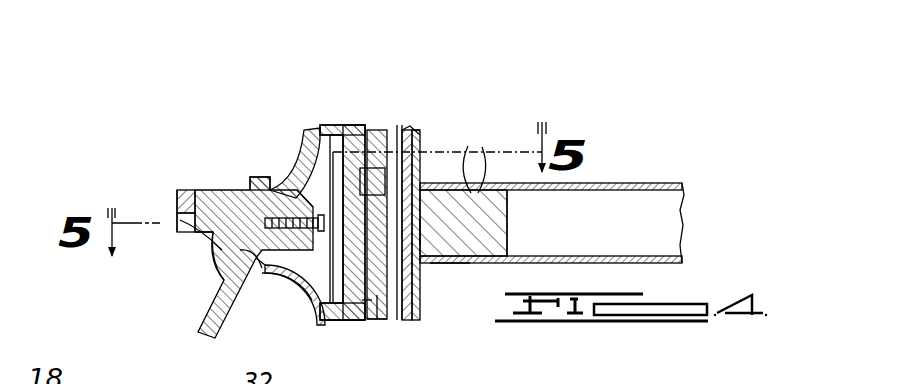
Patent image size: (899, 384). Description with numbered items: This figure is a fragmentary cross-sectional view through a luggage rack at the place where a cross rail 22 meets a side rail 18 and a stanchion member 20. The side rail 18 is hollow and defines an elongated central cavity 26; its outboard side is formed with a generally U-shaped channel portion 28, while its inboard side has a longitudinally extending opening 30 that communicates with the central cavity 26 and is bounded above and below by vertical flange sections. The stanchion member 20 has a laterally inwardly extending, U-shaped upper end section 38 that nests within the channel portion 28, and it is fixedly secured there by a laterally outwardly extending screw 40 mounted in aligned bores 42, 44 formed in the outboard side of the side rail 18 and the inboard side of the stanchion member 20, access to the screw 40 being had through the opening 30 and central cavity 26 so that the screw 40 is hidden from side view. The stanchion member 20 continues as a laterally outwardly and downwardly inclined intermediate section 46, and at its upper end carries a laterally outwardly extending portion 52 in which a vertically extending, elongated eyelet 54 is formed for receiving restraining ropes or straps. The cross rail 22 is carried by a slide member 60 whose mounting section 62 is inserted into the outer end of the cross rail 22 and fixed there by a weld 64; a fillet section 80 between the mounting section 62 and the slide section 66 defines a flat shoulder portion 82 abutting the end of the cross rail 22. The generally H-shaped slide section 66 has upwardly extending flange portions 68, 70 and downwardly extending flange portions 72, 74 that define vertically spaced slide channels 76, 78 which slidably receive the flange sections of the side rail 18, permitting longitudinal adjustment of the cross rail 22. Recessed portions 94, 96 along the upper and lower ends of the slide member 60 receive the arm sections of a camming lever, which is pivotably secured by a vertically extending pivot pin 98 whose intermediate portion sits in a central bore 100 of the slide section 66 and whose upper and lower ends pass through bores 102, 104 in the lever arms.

The side rail 18 is at (339, 124).
The stanchion member 20 is at (193, 322).
The cross rail 22 is at (628, 181).
The central cavity 26 is at (300, 306).
The U-shaped channel portion 28 is at (250, 181).
The longitudinally extending opening 30 is at (306, 200).
The upper end section 38 is at (254, 257).
The screw 40 is at (294, 268).
The bore 42 is at (320, 234).
The bore 44 is at (206, 241).
The intermediate section 46 is at (201, 299).
The laterally outwardly extending portion 52 is at (175, 202).
The eyelet 54 is at (182, 216).
The slide member 60 is at (511, 236).
The mounting section 62 is at (456, 264).
The weld 64 is at (484, 155).
The slide section 66 is at (330, 306).
The upwardly extending flange portion 68 is at (312, 150).
The upwardly extending flange portion 70 is at (385, 132).
The downwardly extending flange portion 72 is at (352, 319).
The downwardly extending flange portion 74 is at (380, 319).
The slide channel 76 is at (400, 178).
The slide channel 78 is at (368, 319).
The fillet section 80 is at (423, 268).
The shoulder portion 82 is at (463, 223).
The recessed portion 94 is at (421, 148).
The recessed portion 96 is at (406, 300).
The pivot pin 98 is at (407, 233).
The central bore 100 is at (390, 228).
The bore 102 is at (398, 126).
The bore 104 is at (399, 320).